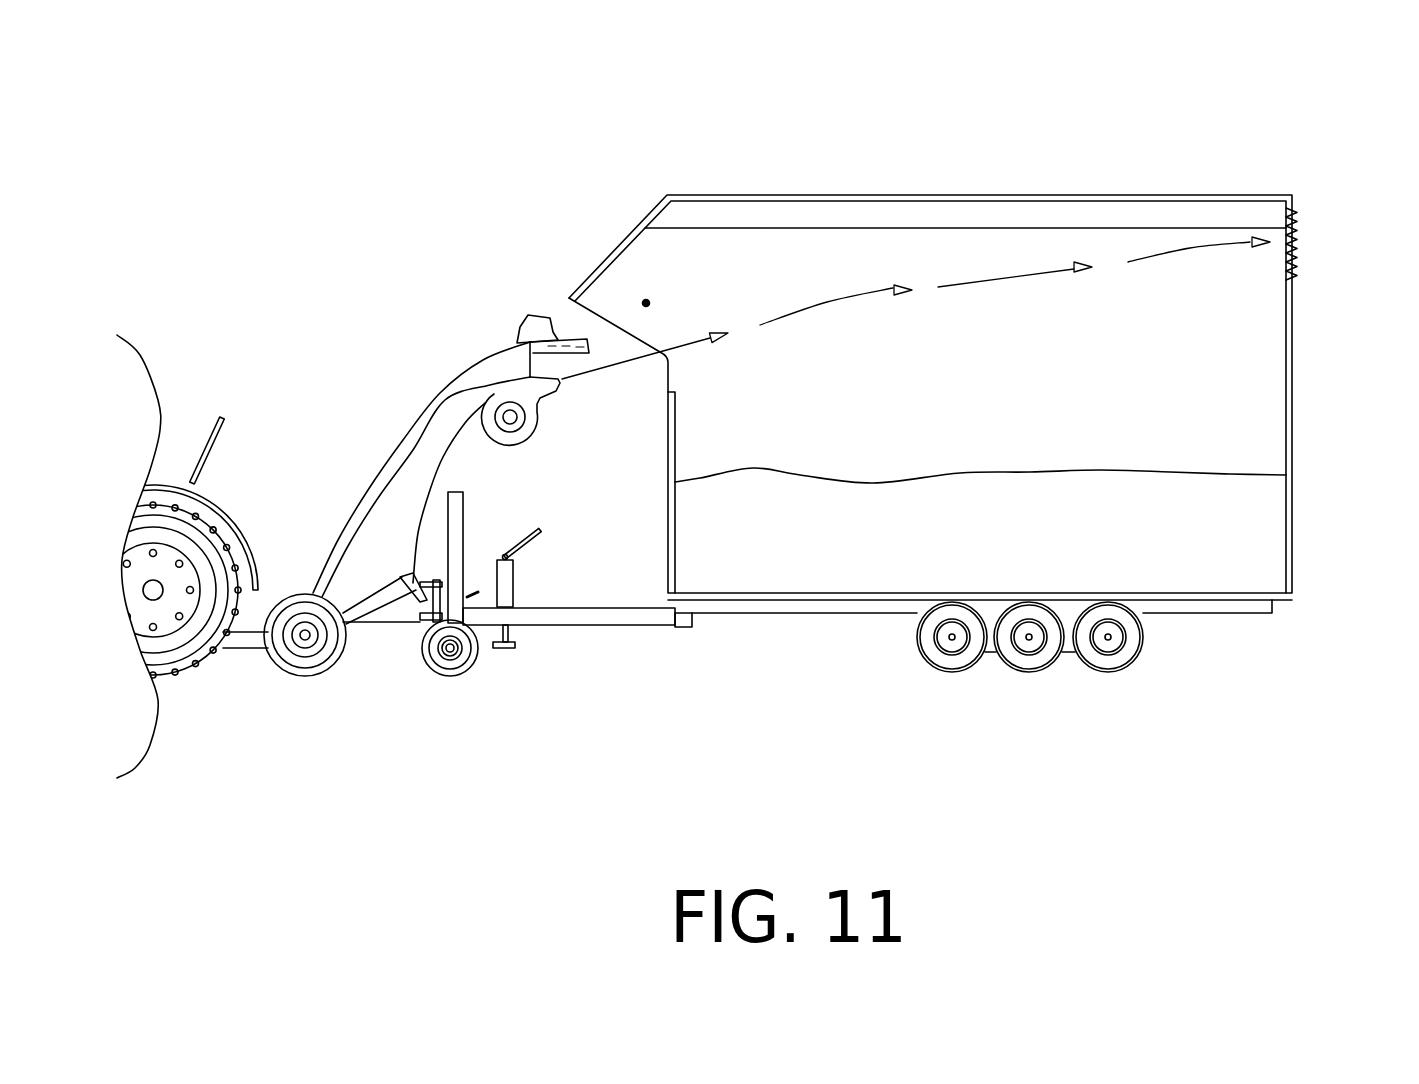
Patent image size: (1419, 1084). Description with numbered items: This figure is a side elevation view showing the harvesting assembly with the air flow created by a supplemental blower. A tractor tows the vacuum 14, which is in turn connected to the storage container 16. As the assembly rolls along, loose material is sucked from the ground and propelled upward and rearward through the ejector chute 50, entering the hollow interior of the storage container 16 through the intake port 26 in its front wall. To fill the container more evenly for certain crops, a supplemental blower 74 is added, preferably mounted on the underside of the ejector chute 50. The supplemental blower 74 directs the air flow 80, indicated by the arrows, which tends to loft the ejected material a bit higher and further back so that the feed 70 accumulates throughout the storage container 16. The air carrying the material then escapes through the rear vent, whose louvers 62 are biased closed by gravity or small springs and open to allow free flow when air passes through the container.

The vacuum 14 is at (372, 585).
The storage container 16 is at (938, 195).
The intake port 26 is at (646, 303).
The ejector chute 50 is at (483, 358).
The louver 62 is at (1295, 258).
The feed 70 is at (1138, 527).
The supplemental blower 74 is at (502, 427).
The air flow 80 is at (968, 285).